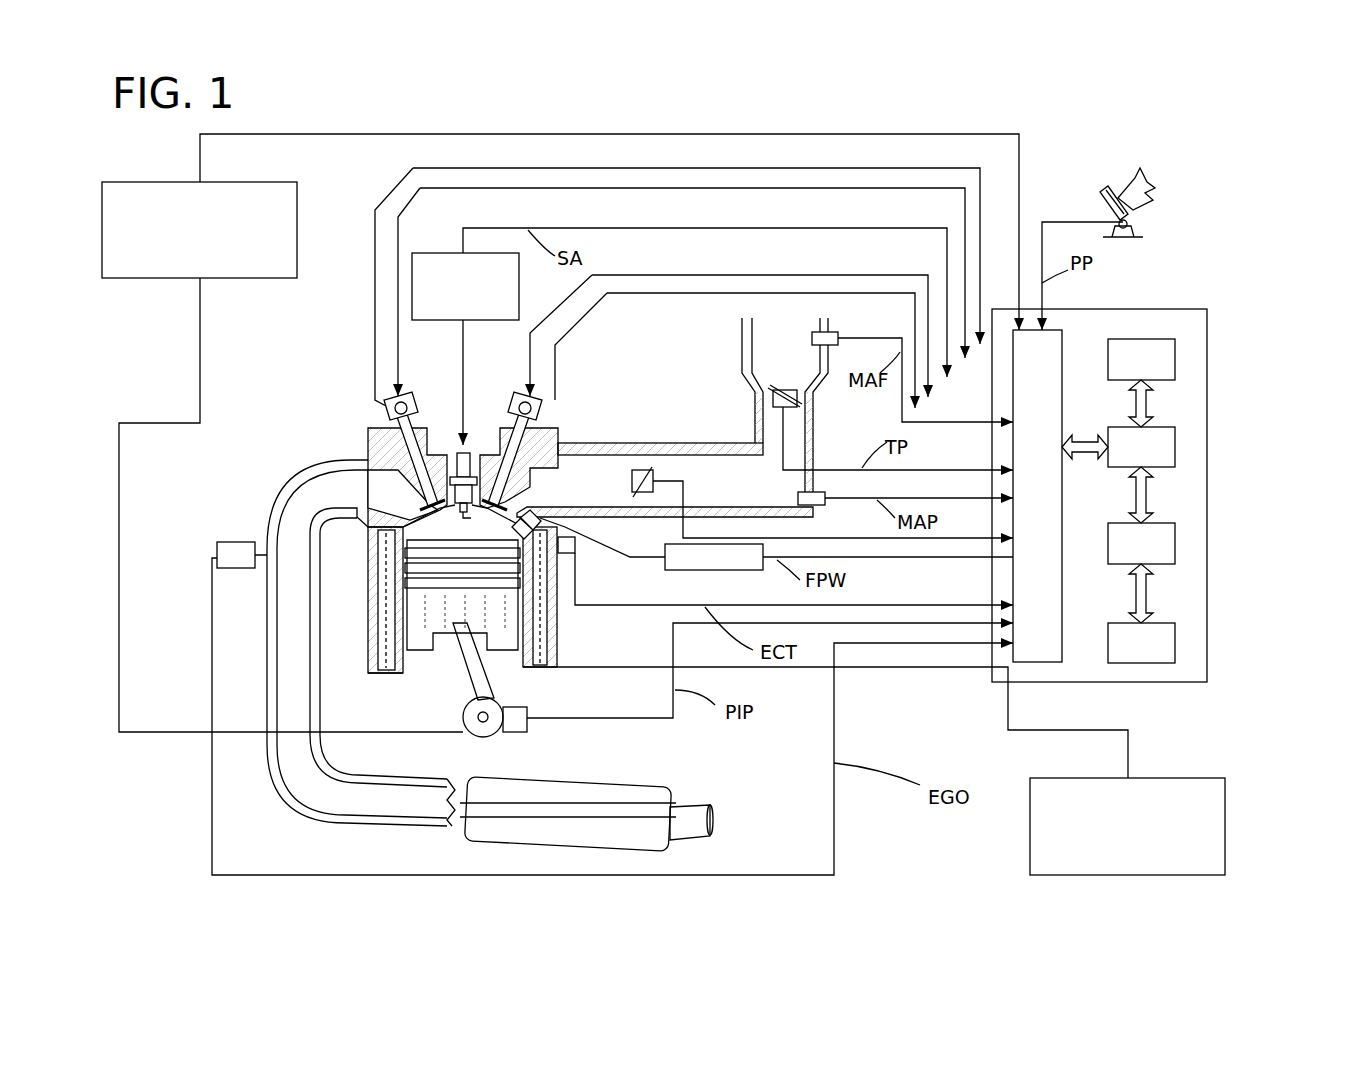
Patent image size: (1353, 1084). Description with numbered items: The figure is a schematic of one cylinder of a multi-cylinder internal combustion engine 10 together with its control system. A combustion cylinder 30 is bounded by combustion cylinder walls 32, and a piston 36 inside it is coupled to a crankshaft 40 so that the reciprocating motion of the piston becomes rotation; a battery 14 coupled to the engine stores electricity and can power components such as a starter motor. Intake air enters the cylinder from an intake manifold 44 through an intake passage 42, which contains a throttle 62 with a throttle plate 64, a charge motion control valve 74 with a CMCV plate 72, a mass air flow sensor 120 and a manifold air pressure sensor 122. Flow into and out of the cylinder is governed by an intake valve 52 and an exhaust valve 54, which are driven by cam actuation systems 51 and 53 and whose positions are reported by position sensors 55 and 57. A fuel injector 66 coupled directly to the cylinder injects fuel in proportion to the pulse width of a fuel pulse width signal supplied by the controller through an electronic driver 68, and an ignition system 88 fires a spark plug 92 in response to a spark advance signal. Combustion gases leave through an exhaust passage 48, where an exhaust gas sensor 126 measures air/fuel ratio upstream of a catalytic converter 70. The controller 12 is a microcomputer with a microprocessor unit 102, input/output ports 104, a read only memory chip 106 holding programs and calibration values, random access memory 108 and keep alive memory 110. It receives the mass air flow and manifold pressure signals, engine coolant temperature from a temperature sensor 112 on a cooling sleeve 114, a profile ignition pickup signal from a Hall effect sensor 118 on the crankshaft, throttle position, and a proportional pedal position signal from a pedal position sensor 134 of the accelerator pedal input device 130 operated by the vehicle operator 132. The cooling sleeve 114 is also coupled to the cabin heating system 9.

The cabin heating system 9 is at (1225, 778).
The internal combustion engine 10 is at (303, 383).
The controller 12 is at (1195, 309).
The battery 14 is at (297, 183).
The combustion cylinder 30 is at (440, 520).
The combustion cylinder walls 32 is at (407, 673).
The piston 36 is at (447, 620).
The crankshaft 40 is at (473, 740).
The intake passage 42 is at (793, 360).
The intake manifold 44 is at (733, 492).
The exhaust passage 48 is at (345, 498).
The cam actuation system 51 is at (530, 398).
The intake valve 52 is at (525, 492).
The cam actuation system 53 is at (408, 393).
The exhaust valve 54 is at (427, 505).
The position sensor 55 is at (533, 420).
The position sensor 57 is at (385, 418).
The throttle 62 is at (798, 392).
The throttle plate 64 is at (765, 388).
The fuel injector 66 is at (530, 515).
The electronic driver 68 is at (690, 570).
The catalytic converter 70 is at (630, 783).
The CMCV plate 72 is at (633, 492).
The charge motion control valve 74 is at (652, 467).
The ignition system 88 is at (455, 255).
The spark plug 92 is at (470, 450).
The microprocessor unit 102 is at (1175, 440).
The input/output ports 104 is at (1062, 338).
The read only memory chip 106 is at (1175, 358).
The random access memory 108 is at (1175, 538).
The keep alive memory 110 is at (1175, 638).
The temperature sensor 112 is at (565, 555).
The cooling sleeve 114 is at (540, 630).
The Hall effect sensor 118 is at (513, 733).
The mass air flow sensor 120 is at (832, 332).
The manifold air pressure sensor 122 is at (813, 506).
The exhaust gas sensor 126 is at (217, 545).
The input device 130 is at (1105, 196).
The vehicle operator 132 is at (1150, 178).
The pedal position sensor 134 is at (1135, 231).